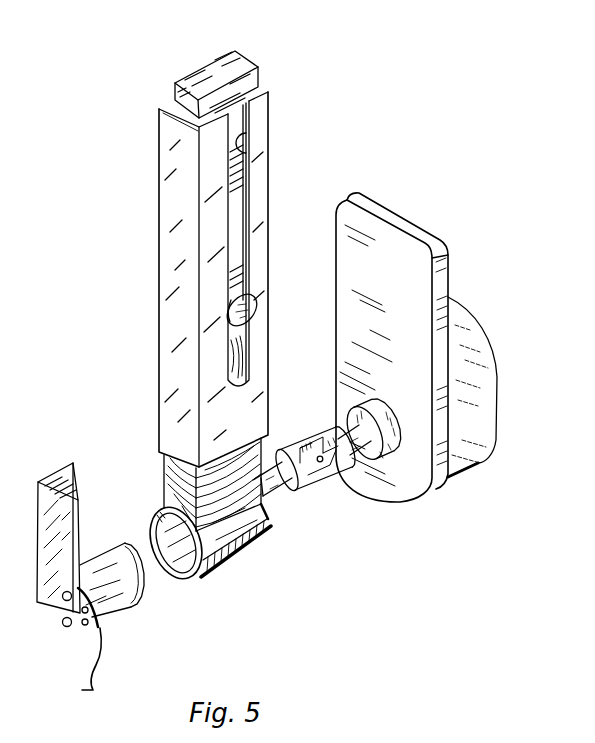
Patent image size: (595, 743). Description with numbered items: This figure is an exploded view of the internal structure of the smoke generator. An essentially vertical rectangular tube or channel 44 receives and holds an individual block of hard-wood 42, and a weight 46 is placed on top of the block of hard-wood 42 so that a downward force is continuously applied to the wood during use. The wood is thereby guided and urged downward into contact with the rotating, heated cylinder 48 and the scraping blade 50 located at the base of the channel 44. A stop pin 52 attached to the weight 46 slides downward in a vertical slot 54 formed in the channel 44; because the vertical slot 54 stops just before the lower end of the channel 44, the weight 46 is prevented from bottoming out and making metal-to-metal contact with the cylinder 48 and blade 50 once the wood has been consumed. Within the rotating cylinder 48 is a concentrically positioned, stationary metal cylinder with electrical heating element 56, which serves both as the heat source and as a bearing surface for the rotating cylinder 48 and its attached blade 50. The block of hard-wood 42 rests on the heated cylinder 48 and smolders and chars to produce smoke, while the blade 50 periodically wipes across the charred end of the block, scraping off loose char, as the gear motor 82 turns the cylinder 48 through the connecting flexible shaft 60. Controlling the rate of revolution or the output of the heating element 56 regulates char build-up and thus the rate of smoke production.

The block of hard-wood 42 is at (258, 446).
The vertical rectangular tube or channel 44 is at (265, 197).
The weight 46 is at (243, 67).
The rotating heated cylinder 48 is at (263, 515).
The scraping blade 50 is at (256, 550).
The stop pin 52 is at (253, 308).
The vertical slot 54 is at (250, 117).
The stationary metal cylinder with electrical heating element 56 is at (137, 583).
The flexible shaft 60 is at (305, 490).
The gear motor 82 is at (455, 312).